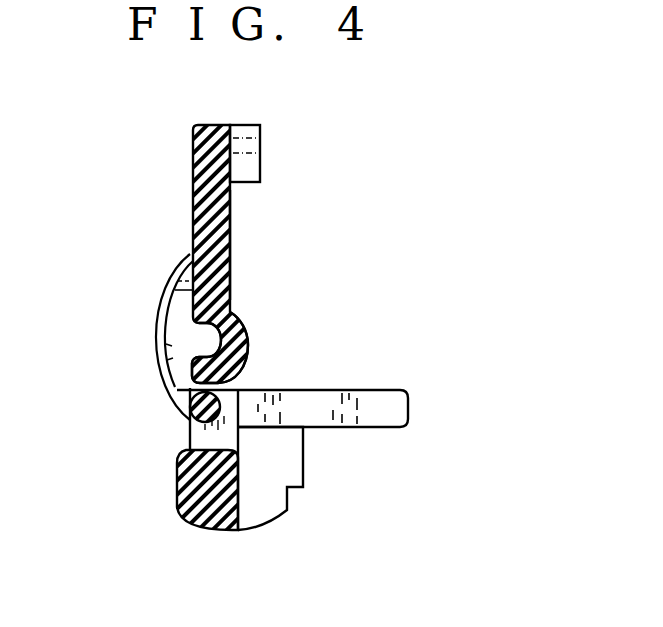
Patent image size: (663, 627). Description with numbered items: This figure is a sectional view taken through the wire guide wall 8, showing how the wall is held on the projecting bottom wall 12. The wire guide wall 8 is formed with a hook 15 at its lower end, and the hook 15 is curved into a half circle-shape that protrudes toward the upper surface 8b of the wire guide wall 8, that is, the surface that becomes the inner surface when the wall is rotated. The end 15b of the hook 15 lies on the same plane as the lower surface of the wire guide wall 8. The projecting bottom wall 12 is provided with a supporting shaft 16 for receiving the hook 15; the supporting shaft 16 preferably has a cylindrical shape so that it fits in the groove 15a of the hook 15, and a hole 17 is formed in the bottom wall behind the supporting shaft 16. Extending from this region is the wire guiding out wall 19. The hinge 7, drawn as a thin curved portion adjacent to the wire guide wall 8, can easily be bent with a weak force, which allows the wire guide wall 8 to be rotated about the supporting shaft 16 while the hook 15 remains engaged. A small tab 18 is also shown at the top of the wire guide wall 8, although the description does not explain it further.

The hinge 7 is at (157, 315).
The wire guide wall 8 is at (193, 190).
The upper surface 8b is at (232, 232).
The projecting bottom wall 12 is at (178, 487).
The hook 15 is at (246, 321).
The groove 15a is at (208, 342).
The end 15b is at (193, 363).
The supporting shaft 16 is at (220, 404).
The hole 17 is at (203, 432).
The tab 18 is at (259, 162).
The wire guiding out wall 19 is at (373, 390).